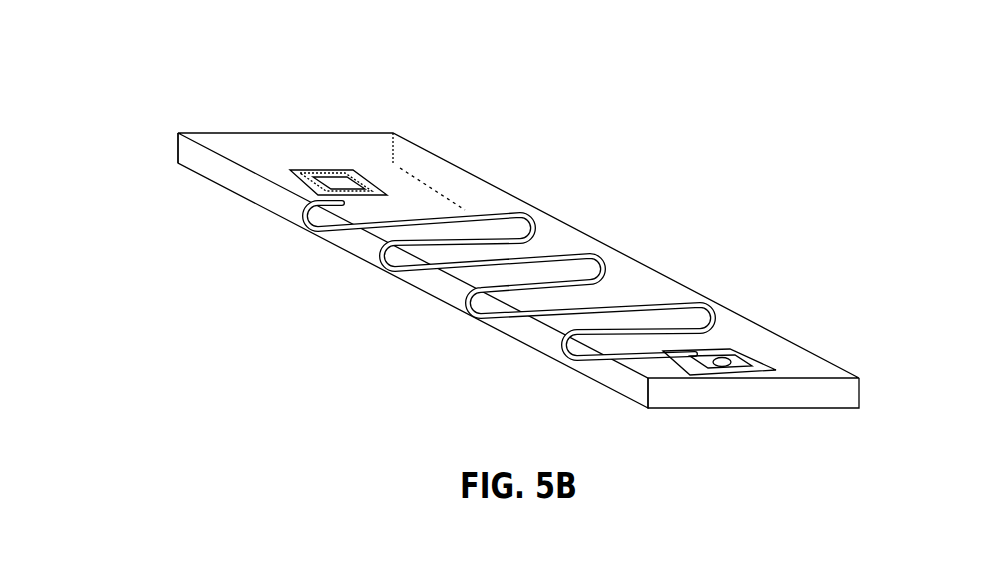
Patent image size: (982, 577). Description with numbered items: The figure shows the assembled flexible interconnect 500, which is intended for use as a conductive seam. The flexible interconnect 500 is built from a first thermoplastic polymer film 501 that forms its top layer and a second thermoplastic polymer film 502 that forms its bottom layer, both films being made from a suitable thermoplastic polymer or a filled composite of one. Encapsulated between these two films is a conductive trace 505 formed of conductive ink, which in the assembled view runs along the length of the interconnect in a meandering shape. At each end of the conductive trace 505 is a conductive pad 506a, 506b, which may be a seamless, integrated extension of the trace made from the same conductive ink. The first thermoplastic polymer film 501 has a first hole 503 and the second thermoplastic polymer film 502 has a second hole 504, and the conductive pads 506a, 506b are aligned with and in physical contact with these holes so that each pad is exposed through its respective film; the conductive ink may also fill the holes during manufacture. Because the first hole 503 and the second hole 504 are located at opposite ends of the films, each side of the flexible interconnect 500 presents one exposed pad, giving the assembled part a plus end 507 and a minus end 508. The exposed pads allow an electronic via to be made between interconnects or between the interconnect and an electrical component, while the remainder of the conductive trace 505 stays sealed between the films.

The flexible interconnect 500 is at (471, 275).
The first thermoplastic polymer film 501 is at (410, 155).
The second thermoplastic polymer film 502 is at (285, 218).
The first hole 503 is at (717, 362).
The second hole 504 is at (322, 183).
The conductive trace 505 is at (517, 220).
The conductive pad 506a is at (695, 352).
The conductive pad 506b is at (367, 187).
The plus end 507 is at (165, 185).
The minus end 508 is at (855, 420).